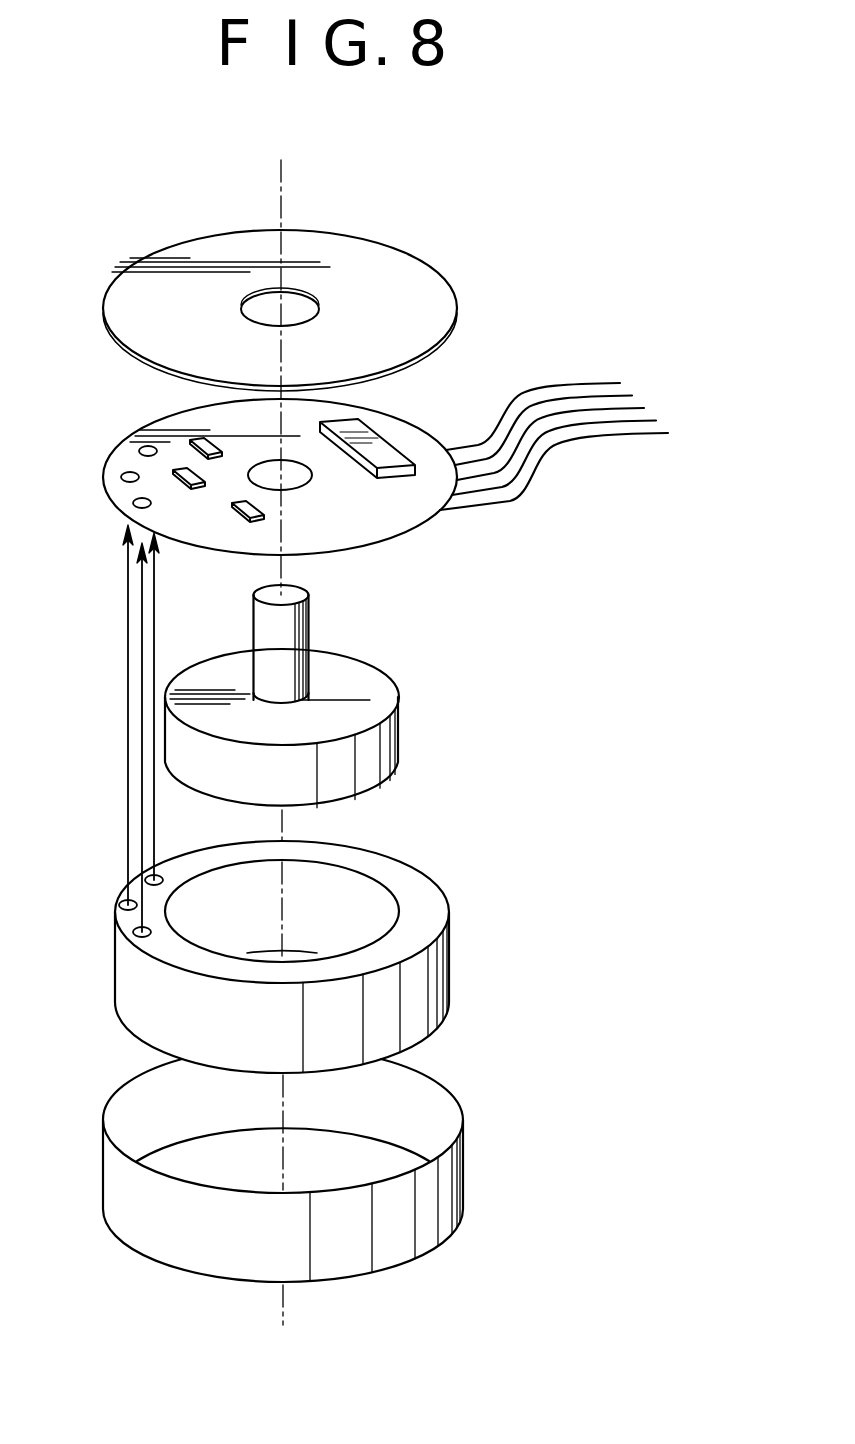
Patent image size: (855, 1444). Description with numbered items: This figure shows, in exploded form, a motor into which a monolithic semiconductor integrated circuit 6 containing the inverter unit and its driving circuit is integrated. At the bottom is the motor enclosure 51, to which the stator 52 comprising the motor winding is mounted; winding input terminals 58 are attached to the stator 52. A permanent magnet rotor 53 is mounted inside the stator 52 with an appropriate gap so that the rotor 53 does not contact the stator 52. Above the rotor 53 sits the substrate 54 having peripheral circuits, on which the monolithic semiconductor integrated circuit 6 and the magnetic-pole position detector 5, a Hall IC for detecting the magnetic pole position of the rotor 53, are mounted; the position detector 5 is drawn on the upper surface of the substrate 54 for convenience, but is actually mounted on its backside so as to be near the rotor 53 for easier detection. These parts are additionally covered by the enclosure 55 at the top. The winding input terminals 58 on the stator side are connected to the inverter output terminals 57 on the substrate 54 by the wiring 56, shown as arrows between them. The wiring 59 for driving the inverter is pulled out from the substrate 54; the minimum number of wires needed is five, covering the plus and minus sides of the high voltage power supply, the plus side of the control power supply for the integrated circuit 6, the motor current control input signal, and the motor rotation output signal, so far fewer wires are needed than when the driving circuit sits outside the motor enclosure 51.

The magnetic-pole position detector 5 is at (196, 440).
The monolithic semiconductor integrated circuit 6 is at (398, 450).
The motor enclosure 51 is at (465, 1165).
The stator 52 is at (450, 965).
The permanent magnet rotor 53 is at (400, 728).
The substrate 54 is at (375, 545).
The enclosure 55 is at (450, 283).
The wiring 56 is at (118, 728).
The inverter output terminals 57 is at (118, 478).
The winding input terminals 58 is at (122, 905).
The wiring 59 is at (595, 382).